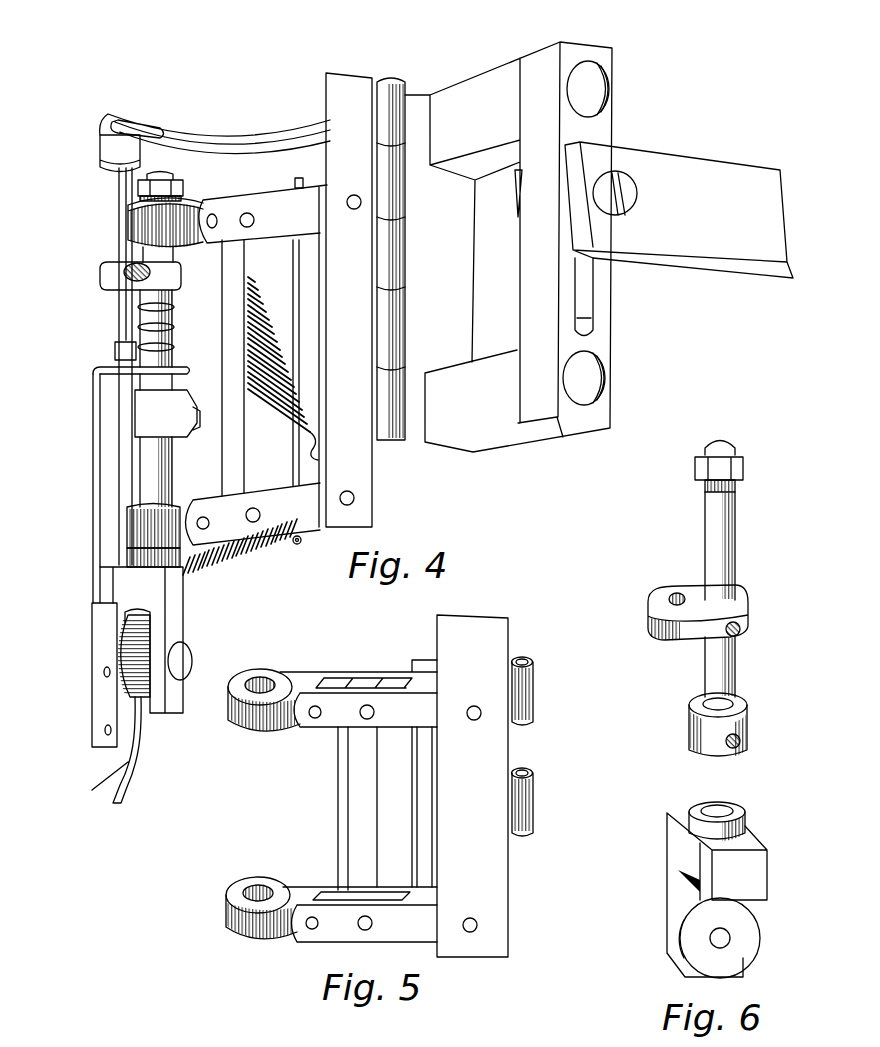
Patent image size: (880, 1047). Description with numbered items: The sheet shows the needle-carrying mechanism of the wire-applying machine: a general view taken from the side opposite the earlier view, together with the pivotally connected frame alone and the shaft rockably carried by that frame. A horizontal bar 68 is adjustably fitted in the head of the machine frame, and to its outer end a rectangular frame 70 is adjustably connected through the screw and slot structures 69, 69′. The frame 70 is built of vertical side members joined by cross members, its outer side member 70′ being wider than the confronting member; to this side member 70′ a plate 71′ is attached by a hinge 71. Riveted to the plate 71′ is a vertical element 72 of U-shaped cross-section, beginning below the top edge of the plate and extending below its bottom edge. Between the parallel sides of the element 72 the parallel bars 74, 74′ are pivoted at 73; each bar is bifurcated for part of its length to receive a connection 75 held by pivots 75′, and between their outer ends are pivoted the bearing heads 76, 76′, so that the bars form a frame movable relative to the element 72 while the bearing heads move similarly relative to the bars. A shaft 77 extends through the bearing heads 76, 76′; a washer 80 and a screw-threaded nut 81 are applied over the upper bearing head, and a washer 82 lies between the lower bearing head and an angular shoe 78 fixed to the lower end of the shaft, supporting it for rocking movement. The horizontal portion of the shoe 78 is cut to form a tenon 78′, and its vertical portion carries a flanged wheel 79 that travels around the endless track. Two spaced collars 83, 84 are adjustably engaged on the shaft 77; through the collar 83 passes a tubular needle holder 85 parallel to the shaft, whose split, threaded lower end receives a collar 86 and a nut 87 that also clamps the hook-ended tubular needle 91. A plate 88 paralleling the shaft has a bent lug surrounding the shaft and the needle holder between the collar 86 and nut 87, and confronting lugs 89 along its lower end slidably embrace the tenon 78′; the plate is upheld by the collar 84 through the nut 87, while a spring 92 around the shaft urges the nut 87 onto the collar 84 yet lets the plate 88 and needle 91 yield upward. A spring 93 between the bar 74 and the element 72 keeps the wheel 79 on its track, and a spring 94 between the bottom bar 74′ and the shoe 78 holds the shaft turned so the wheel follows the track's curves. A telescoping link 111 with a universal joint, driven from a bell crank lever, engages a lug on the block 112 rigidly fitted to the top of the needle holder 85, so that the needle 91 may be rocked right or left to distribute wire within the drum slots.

In FIG. 4, the horizontal bar 68 is at (693, 168).
In FIG. 4, the screw and slot structure 69 is at (630, 200).
In FIG. 4, the screw and slot structure 69′ is at (590, 320).
In FIG. 4, the rectangular frame 70 is at (492, 80).
In FIG. 4, the outer side member 70′ is at (412, 102).
In FIG. 4, the hinge 71 is at (398, 267).
In FIG. 4, the plate 71′ is at (362, 460).
In FIG. 5, the plate 71′ is at (502, 632).
In FIG. 4, the vertical element 72 is at (303, 181).
In FIG. 4, the pivot 73 is at (354, 193).
In FIG. 4, the parallel bar 74 is at (257, 200).
In FIG. 5, the parallel bar 74 is at (353, 677).
In FIG. 4, the parallel bar 74′ is at (257, 495).
In FIG. 5, the parallel bar 74′ is at (388, 935).
In FIG. 4, the connection 75 is at (230, 438).
In FIG. 5, the connection 75 is at (348, 800).
In FIG. 5, the pivot 75′ is at (375, 712).
In FIG. 4, the bearing head 76 is at (128, 226).
In FIG. 5, the bearing head 76 is at (253, 668).
In FIG. 4, the bearing head 76′ is at (135, 527).
In FIG. 5, the bearing head 76′ is at (248, 882).
In FIG. 4, the shaft 77 is at (182, 480).
In FIG. 6, the shaft 77 is at (728, 552).
In FIG. 4, the angular shoe 78 is at (178, 695).
In FIG. 6, the angular shoe 78 is at (677, 843).
In FIG. 6, the tenon 78′ is at (760, 880).
In FIG. 4, the flanged wheel 79 is at (140, 703).
In FIG. 6, the flanged wheel 79 is at (747, 950).
In FIG. 4, the washer 80 is at (187, 196).
In FIG. 6, the washer 80 is at (737, 482).
In FIG. 4, the nut 81 is at (183, 182).
In FIG. 6, the nut 81 is at (743, 467).
In FIG. 4, the washer 82 is at (137, 555).
In FIG. 6, the washer 82 is at (745, 825).
In FIG. 4, the collar 83 is at (175, 275).
In FIG. 6, the collar 83 is at (747, 617).
In FIG. 4, the collar 84 is at (178, 405).
In FIG. 6, the collar 84 is at (747, 730).
In FIG. 4, the tubular needle holder 85 is at (117, 197).
In FIG. 4, the collar 86 is at (115, 355).
In FIG. 4, the nut 87 is at (122, 380).
In FIG. 4, the plate 88 is at (103, 487).
In FIG. 4, the confronting lugs 89 is at (103, 645).
In FIG. 4, the tubular needle 91 is at (92, 790).
In FIG. 4, the spring 92 is at (173, 332).
In FIG. 4, the spring 93 is at (262, 298).
In FIG. 4, the spring 94 is at (247, 563).
In FIG. 4, the telescoping link 111 is at (222, 137).
In FIG. 4, the block 112 is at (100, 147).